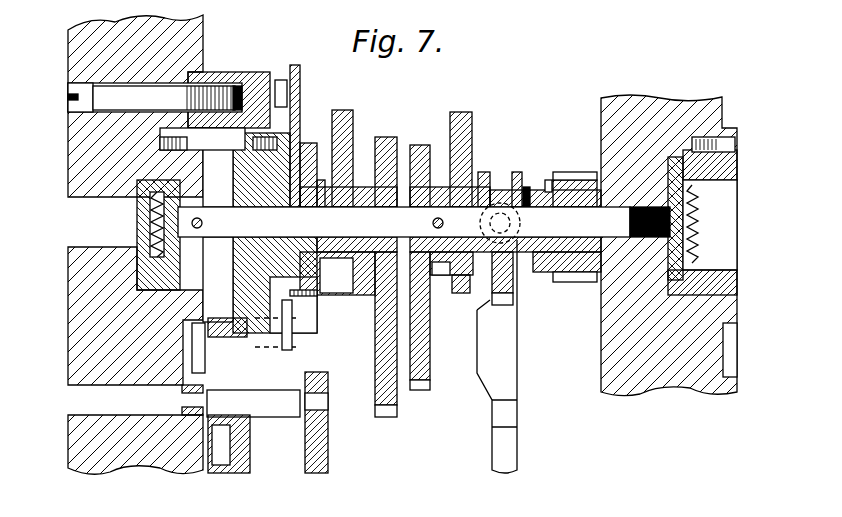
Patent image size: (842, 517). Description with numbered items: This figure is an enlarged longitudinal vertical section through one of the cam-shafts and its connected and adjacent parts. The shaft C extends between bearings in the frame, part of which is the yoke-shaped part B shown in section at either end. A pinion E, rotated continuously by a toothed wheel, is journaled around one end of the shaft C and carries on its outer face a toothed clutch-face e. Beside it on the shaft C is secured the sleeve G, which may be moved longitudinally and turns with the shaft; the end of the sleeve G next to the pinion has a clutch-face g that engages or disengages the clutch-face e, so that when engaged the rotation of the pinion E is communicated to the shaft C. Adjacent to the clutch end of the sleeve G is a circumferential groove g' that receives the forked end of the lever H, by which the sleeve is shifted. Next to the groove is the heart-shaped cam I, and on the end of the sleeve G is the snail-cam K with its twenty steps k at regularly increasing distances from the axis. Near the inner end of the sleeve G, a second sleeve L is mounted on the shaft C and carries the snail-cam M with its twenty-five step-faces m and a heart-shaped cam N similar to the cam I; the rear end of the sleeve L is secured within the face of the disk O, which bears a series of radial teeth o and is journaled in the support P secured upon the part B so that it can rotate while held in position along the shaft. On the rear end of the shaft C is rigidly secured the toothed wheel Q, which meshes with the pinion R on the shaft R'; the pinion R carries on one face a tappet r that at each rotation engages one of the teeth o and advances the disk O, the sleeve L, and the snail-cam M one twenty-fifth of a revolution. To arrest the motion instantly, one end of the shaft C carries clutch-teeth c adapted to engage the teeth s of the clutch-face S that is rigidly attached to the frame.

The yoke-shaped part B is at (200, 30).
The support P is at (237, 72).
The radial teeth o is at (280, 80).
The disk O is at (300, 88).
The heart-shaped cam N is at (346, 110).
The snail-cam M is at (383, 137).
The second sleeve L is at (383, 195).
The snail-cam K is at (420, 147).
The heart-shaped cam I is at (472, 128).
The sleeve G is at (498, 190).
The clutch-face g is at (533, 174).
The toothed clutch-face e is at (548, 180).
The shaft C is at (578, 215).
The toothed wheel Q is at (228, 193).
The clutch-face S is at (140, 203).
The clutch-teeth c is at (150, 222).
The teeth s is at (150, 235).
The pinion R is at (217, 250).
The tappet r is at (292, 352).
The shaft R' is at (253, 431).
The step-faces m is at (383, 417).
The steps k is at (428, 390).
The circumferential groove g' is at (523, 287).
The pinion E is at (575, 283).
The lever H is at (512, 363).